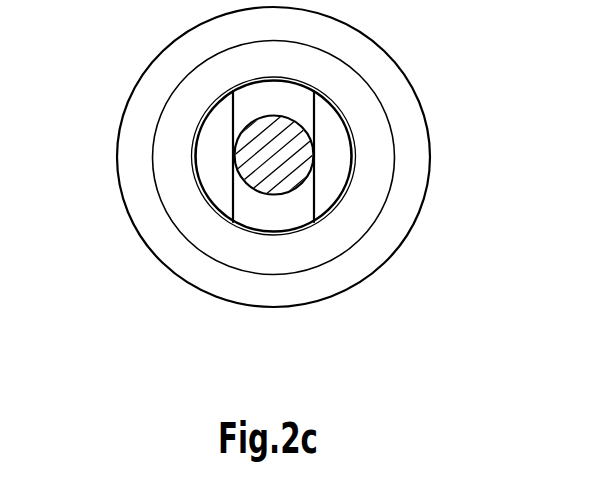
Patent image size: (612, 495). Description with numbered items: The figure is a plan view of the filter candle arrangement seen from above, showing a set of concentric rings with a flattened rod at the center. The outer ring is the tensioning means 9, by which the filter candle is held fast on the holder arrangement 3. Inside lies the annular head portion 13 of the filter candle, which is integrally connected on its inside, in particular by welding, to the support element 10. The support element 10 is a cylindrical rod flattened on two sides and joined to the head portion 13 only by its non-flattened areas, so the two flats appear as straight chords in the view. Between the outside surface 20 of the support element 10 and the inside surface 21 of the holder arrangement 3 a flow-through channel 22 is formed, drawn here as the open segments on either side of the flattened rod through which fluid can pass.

The holder arrangement 3 is at (207, 158).
The tensioning means 9 is at (375, 68).
The support element 10 is at (360, 205).
The head portion 13 is at (207, 207).
The outside surface 20 is at (283, 208).
The inside surface 21 is at (307, 233).
The flow-through channel 22 is at (217, 127).